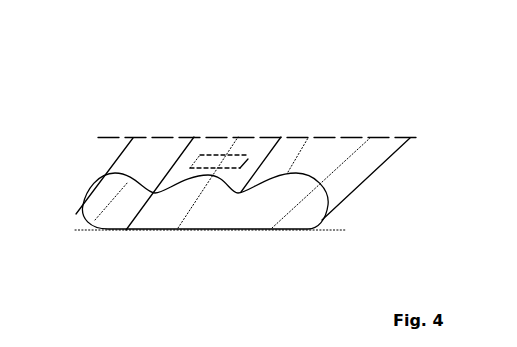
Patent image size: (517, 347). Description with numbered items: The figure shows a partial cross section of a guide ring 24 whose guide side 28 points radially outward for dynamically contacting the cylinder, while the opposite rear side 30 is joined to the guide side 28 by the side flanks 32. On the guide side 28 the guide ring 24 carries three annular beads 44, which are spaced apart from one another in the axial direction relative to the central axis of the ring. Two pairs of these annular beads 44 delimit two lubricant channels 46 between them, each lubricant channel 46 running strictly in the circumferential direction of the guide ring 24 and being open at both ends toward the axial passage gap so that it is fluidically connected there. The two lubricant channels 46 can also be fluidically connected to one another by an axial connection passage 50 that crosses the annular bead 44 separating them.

The guide ring 24 is at (82, 131).
The guide side 28 is at (160, 148).
The rear side 30 is at (132, 230).
The side flanks 32 is at (365, 207).
The annular beads 44 is at (135, 150).
The lubricant channel 46 is at (170, 177).
The axial connection passage 50 is at (254, 156).